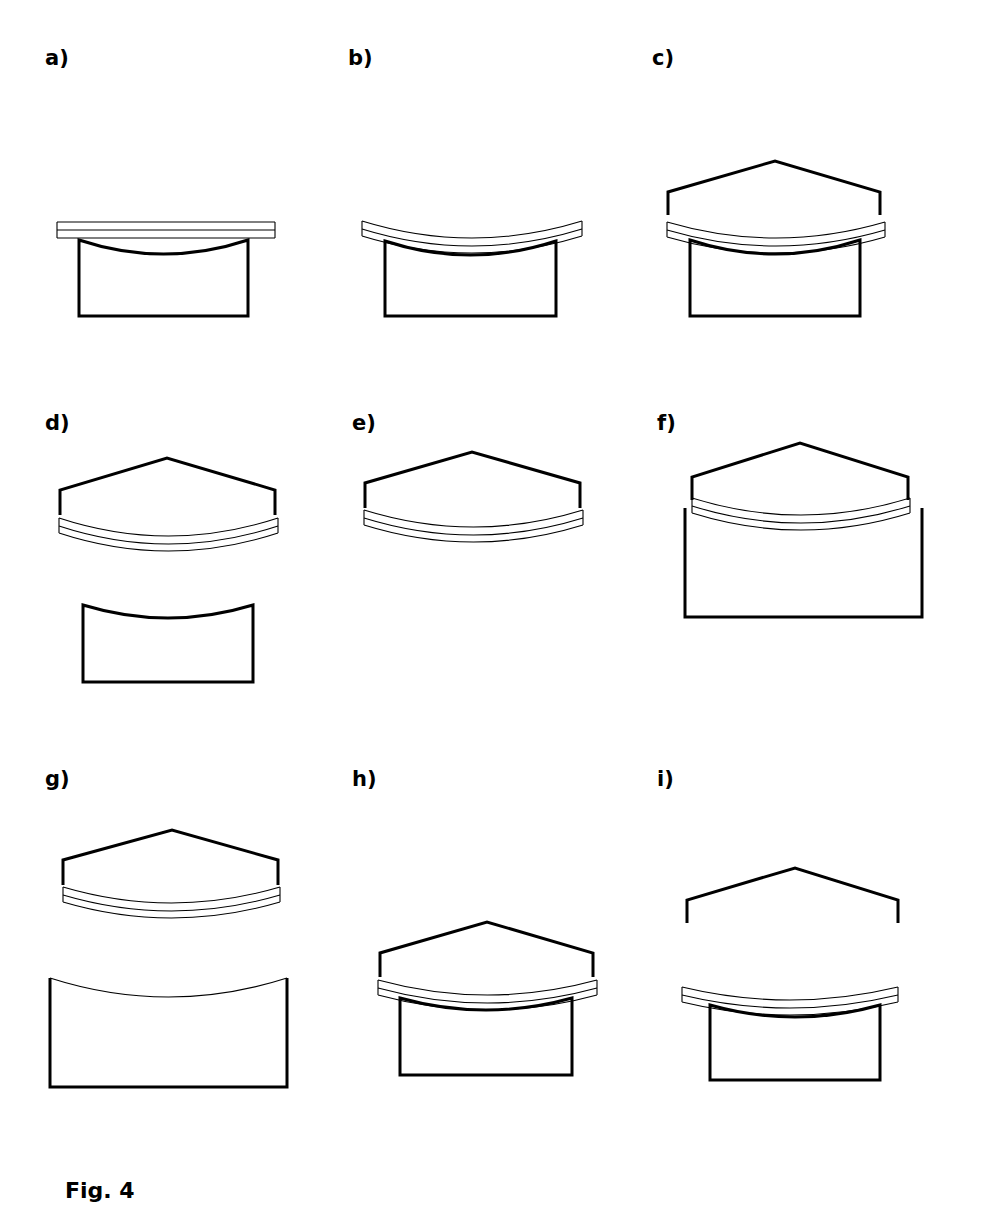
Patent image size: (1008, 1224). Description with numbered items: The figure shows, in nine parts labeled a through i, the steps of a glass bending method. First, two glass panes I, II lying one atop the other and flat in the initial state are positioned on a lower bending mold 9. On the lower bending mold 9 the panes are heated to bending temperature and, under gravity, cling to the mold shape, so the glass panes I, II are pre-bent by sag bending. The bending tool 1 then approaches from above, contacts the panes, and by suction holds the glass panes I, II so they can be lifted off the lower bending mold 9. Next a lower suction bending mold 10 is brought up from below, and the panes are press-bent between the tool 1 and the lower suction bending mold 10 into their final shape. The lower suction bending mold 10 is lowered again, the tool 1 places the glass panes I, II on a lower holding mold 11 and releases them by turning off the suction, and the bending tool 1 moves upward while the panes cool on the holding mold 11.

The bending tool 1 is at (785, 178).
The lower bending mold 9 is at (232, 297).
The lower suction bending mold 10 is at (713, 568).
The lower holding mold 11 is at (555, 1055).
The glass pane I is at (177, 224).
The glass pane II is at (189, 232).